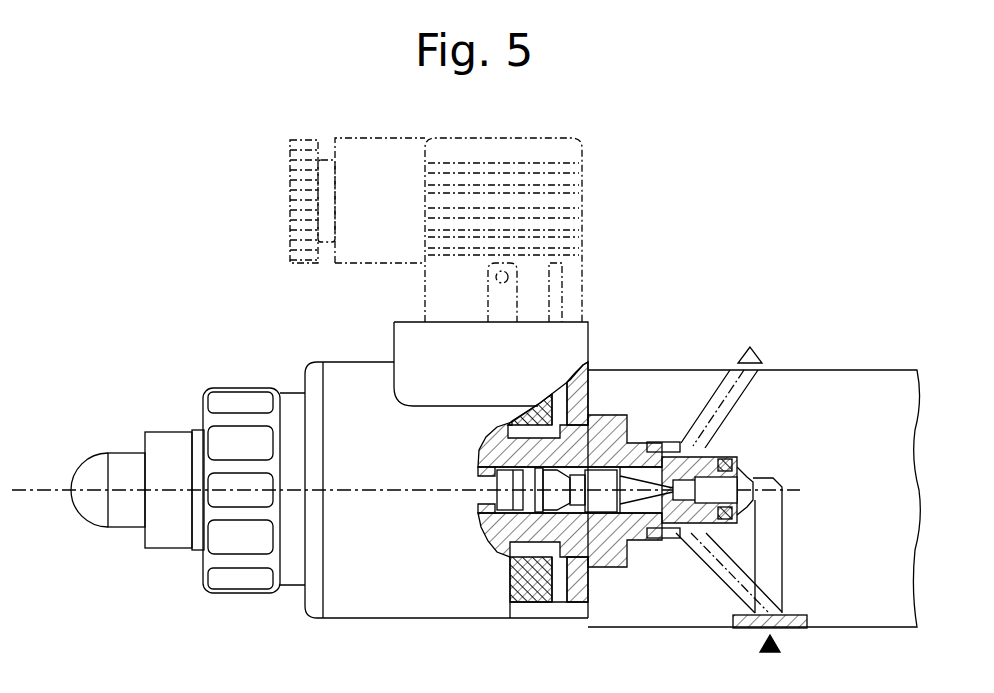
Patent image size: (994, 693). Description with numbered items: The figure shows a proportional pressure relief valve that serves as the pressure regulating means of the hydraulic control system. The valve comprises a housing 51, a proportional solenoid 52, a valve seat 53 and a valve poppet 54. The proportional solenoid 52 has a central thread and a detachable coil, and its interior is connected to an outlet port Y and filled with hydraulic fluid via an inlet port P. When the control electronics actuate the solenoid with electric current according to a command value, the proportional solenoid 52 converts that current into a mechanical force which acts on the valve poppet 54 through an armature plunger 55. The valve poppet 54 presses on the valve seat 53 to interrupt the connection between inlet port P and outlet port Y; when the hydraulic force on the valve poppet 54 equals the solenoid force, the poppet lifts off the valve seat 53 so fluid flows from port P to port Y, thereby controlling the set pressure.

The housing 51 is at (893, 388).
The proportional solenoid 52 is at (372, 527).
The valve seat 53 is at (720, 457).
The valve poppet 54 is at (640, 467).
The armature plunger 55 is at (508, 492).